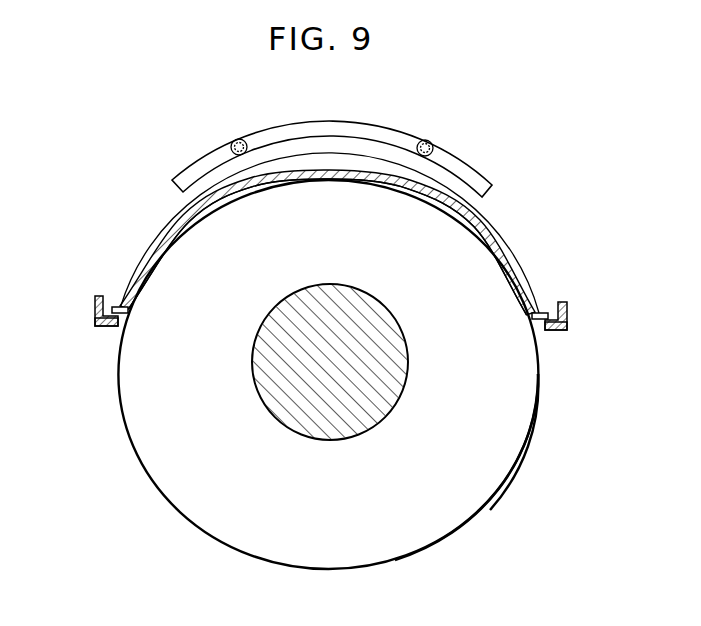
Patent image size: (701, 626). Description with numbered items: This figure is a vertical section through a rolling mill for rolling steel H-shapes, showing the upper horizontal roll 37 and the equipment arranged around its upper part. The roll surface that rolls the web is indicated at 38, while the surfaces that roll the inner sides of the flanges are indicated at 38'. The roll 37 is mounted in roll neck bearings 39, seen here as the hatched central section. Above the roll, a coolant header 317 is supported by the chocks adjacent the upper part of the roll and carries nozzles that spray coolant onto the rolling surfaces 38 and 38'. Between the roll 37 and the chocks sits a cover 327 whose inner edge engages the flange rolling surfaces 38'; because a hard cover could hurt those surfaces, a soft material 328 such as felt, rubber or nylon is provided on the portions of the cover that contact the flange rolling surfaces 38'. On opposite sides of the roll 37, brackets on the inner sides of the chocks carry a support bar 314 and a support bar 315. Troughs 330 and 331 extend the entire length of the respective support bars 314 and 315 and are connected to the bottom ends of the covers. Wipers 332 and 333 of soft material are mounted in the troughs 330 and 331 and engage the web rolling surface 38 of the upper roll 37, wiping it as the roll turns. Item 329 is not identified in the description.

The upper horizontal roll 37 is at (448, 514).
The web rolling surface 38 is at (475, 467).
The flange rolling surfaces 38' is at (536, 442).
The roll neck bearings 39 is at (345, 441).
The cover 327 is at (463, 232).
The soft material 328 is at (417, 198).
The cover strip 329 is at (480, 226).
The coolant header 317 is at (470, 168).
The trough 330 is at (95, 312).
The trough 331 is at (567, 318).
The wiper 332 is at (113, 307).
The wiper 333 is at (552, 302).
The support bar 314 is at (103, 328).
The support bar 315 is at (558, 333).